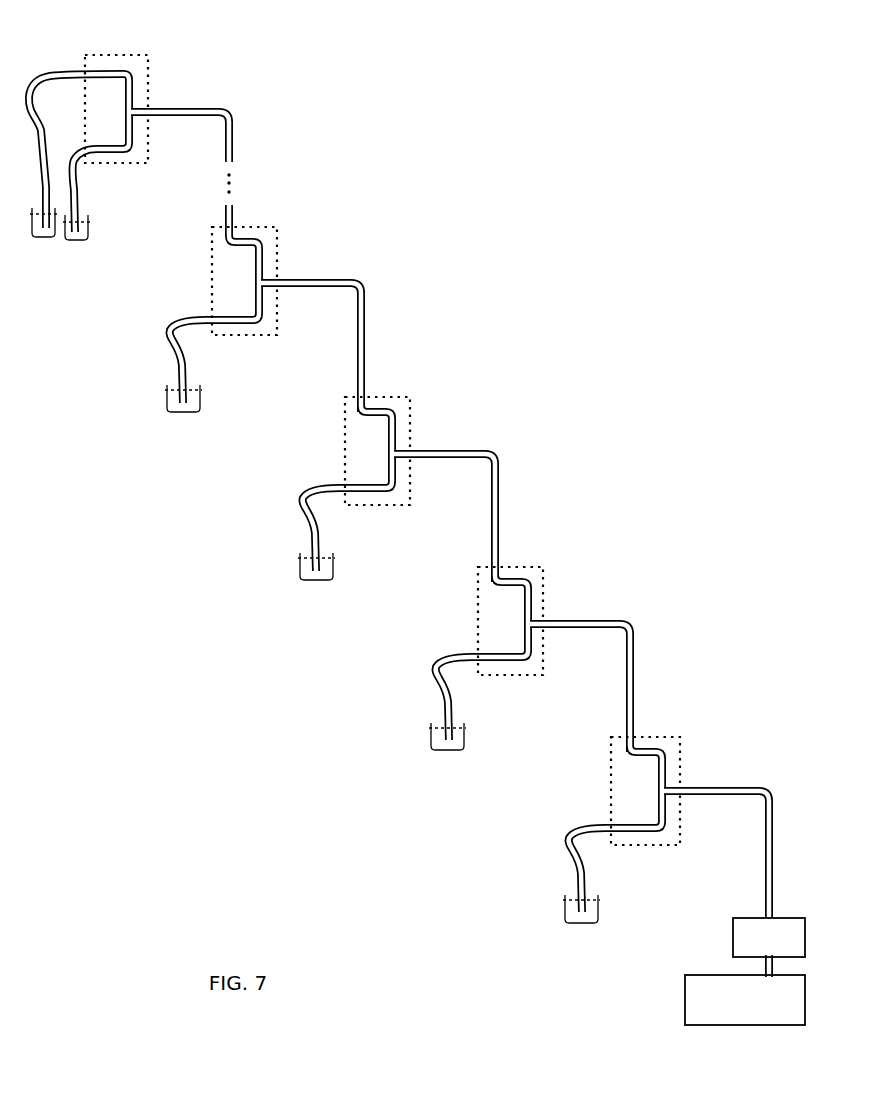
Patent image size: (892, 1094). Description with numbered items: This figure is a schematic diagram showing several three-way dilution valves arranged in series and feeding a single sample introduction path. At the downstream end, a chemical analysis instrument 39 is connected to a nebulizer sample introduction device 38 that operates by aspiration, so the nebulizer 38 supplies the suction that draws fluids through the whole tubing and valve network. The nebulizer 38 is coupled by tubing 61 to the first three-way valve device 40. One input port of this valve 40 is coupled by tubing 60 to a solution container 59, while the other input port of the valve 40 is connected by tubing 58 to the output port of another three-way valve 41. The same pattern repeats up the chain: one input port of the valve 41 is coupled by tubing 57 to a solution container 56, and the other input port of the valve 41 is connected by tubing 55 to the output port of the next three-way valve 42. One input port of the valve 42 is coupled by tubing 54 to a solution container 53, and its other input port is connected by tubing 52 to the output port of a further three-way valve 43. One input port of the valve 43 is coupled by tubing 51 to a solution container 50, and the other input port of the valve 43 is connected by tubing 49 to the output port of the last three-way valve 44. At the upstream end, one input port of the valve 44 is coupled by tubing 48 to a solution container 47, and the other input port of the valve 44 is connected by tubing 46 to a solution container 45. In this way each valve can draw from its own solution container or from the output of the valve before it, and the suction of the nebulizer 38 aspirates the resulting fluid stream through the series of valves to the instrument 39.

The nebulizer sample introduction device 38 is at (740, 936).
The chemical analysis instrument 39 is at (710, 1010).
The first 3-way valve device 40 is at (686, 733).
The 3-way valve 41 is at (553, 563).
The 3-way valve 42 is at (420, 393).
The 3-way valve 43 is at (285, 223).
The 3-way valve 44 is at (165, 63).
The solution container 45 is at (34, 230).
The tubing 46 is at (29, 96).
The solution container 47 is at (78, 240).
The tubing 48 is at (76, 166).
The tubing 49 is at (233, 136).
The solution container 50 is at (175, 412).
The tubing 51 is at (168, 328).
The tubing 52 is at (363, 290).
The solution container 53 is at (308, 580).
The tubing 54 is at (301, 496).
The tubing 55 is at (497, 461).
The solution container 56 is at (441, 750).
The tubing 57 is at (434, 665).
The tubing 58 is at (632, 638).
The solution container 59 is at (568, 918).
The tubing 60 is at (566, 835).
The tubing 61 is at (772, 802).